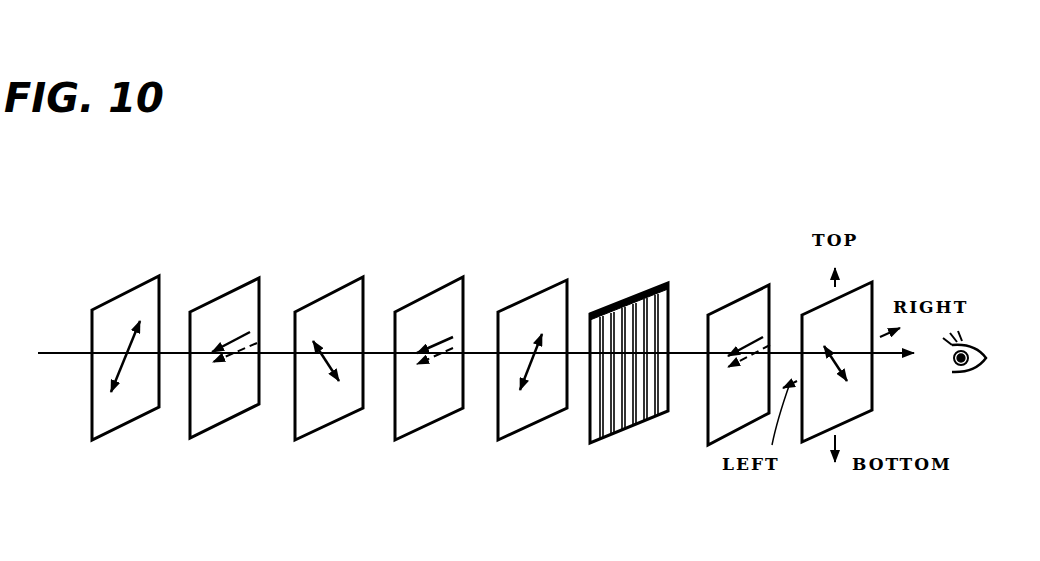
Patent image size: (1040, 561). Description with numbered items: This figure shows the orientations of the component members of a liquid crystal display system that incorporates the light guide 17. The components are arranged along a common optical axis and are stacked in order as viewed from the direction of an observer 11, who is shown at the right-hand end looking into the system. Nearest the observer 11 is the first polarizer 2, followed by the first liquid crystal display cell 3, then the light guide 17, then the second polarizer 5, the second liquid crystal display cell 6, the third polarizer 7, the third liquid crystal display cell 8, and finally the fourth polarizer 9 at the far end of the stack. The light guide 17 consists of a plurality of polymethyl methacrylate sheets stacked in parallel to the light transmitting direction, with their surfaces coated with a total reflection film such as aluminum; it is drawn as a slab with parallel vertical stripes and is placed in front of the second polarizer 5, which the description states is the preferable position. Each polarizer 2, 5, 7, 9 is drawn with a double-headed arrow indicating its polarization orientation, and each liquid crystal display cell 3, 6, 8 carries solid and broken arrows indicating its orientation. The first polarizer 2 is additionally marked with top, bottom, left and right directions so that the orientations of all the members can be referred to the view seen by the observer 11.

The first polarizer 2 is at (857, 293).
The first liquid crystal display cell 3 is at (742, 305).
The second polarizer 5 is at (540, 300).
The second liquid crystal display cell 6 is at (437, 300).
The third polarizer 7 is at (333, 300).
The third liquid crystal display cell 8 is at (228, 300).
The fourth polarizer 9 is at (124, 298).
The observer 11 is at (972, 350).
The light guide 17 is at (643, 292).